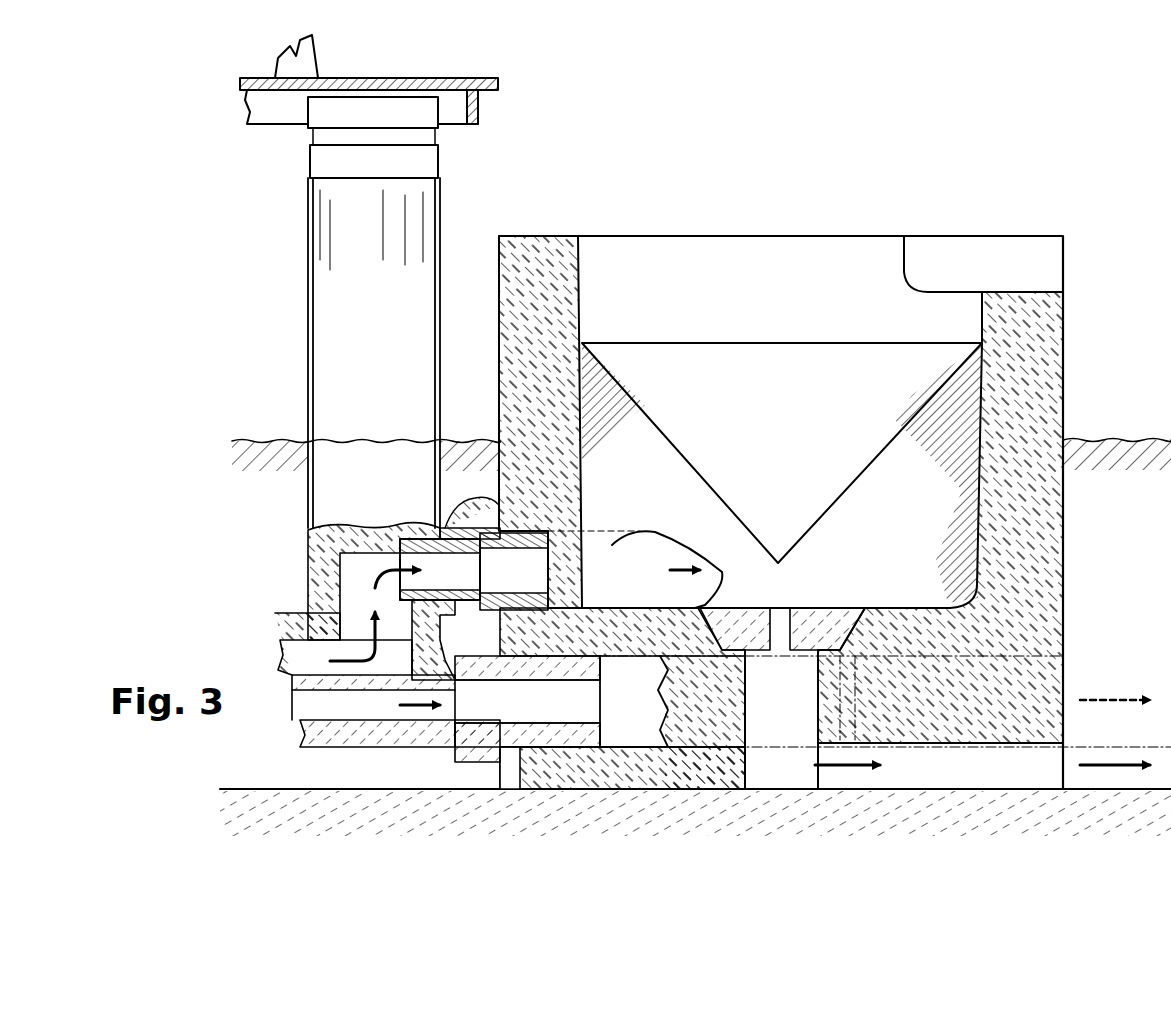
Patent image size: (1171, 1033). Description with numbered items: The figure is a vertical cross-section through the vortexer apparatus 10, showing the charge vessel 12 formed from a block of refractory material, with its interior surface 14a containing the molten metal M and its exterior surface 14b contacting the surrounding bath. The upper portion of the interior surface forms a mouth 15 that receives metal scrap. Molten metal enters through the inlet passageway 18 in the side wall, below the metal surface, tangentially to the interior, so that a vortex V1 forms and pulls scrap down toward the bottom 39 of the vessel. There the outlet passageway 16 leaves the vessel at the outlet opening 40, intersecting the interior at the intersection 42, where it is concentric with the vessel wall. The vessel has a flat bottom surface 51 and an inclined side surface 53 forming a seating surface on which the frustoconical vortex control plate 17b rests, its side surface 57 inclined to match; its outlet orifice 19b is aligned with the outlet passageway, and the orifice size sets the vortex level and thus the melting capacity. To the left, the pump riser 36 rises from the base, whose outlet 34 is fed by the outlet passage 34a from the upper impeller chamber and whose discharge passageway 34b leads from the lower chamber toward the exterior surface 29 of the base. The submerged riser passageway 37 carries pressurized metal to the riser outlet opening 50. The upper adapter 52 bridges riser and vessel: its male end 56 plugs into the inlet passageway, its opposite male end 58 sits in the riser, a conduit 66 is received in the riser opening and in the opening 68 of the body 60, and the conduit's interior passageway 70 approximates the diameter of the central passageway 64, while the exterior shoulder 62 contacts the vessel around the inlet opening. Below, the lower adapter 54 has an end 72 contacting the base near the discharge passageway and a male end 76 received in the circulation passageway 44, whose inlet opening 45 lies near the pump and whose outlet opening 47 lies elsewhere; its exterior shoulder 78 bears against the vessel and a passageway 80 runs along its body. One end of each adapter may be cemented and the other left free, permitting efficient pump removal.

The vortexer apparatus 10 is at (827, 512).
The charge vessel 12 is at (1045, 322).
The interior surface 14a is at (578, 326).
The exterior surface 14b is at (1063, 388).
The mouth 15 is at (778, 238).
The outlet passageway 16 is at (745, 715).
The vortex control plate 17b is at (845, 605).
The inlet passageway 18 is at (660, 545).
The outlet orifice 19b is at (790, 610).
The exterior surface of the base 29 is at (435, 680).
The outlet 34 is at (270, 600).
The outlet passage 34a is at (300, 672).
The discharge passageway 34b is at (320, 718).
The riser 36 is at (350, 405).
The riser passageway 37 is at (320, 600).
The bottom of the vessel 39 is at (880, 636).
The outlet opening 40 is at (1063, 747).
The intersection 42 is at (812, 655).
The circulation passageway 44 is at (645, 658).
The inlet opening 45 is at (555, 750).
The outlet opening 47 is at (1063, 664).
The outlet opening 50 is at (450, 625).
The flat bottom surface 51 is at (845, 655).
The upper adapter 52 is at (445, 540).
The inclined side surface 53 is at (720, 612).
The lower adapter 54 is at (470, 755).
The male end 56 is at (540, 565).
The side surface 57 is at (878, 612).
The male end 58 is at (335, 600).
The body 60 is at (482, 532).
The exterior shoulder 62 is at (505, 520).
The passageway 64 is at (535, 600).
The conduit 66 is at (420, 545).
The opening 68 is at (480, 566).
The interior passageway 70 is at (480, 588).
The end 72 is at (395, 740).
The male end 76 is at (600, 728).
The exterior shoulder 78 is at (515, 755).
The passageway 80 is at (515, 725).
The molten metal M is at (460, 470).
The vortex V1 is at (795, 360).